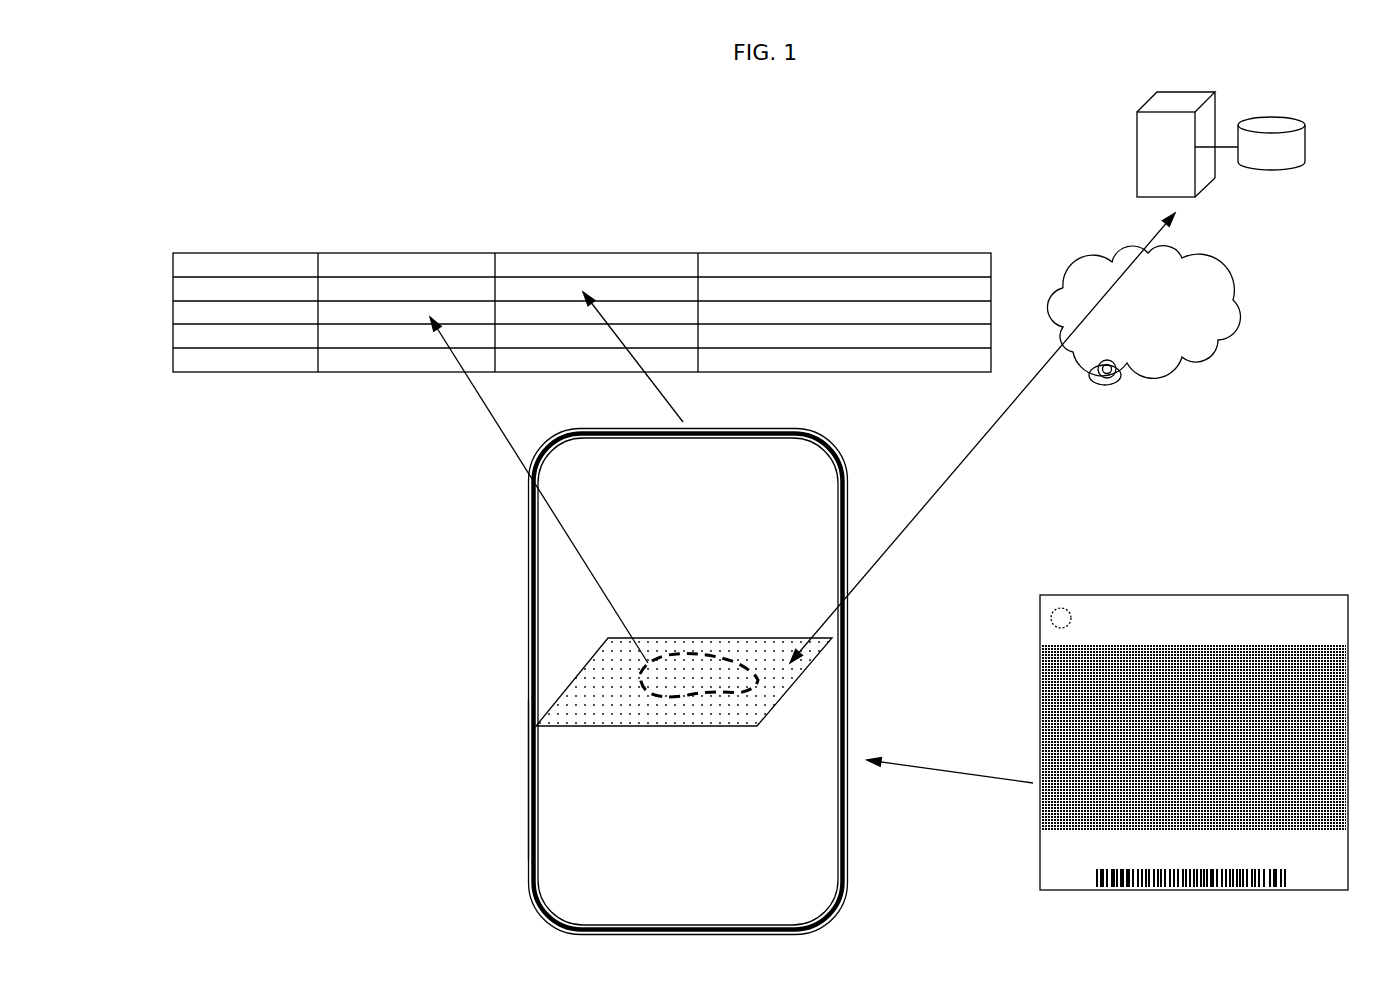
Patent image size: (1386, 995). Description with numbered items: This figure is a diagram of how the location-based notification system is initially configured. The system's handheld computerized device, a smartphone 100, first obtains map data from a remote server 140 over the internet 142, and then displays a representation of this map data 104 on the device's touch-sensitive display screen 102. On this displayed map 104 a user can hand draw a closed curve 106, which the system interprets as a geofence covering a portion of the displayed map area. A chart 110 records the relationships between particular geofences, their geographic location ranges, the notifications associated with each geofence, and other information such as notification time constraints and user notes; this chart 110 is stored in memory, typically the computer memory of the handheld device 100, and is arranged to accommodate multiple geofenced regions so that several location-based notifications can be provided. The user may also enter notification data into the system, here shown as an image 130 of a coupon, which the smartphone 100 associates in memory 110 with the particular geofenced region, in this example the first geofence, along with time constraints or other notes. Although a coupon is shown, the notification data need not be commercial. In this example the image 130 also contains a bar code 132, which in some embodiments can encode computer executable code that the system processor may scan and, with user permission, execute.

The smartphone 100 is at (505, 552).
The touch-sensitive display screen 102 is at (805, 462).
The map data representation 104 is at (646, 738).
The closed curve 106 is at (664, 645).
The chart 110 is at (170, 254).
The image 130 is at (1194, 582).
The bar code 132 is at (1165, 902).
The remote server 140 is at (1117, 137).
The internet 142 is at (1143, 315).